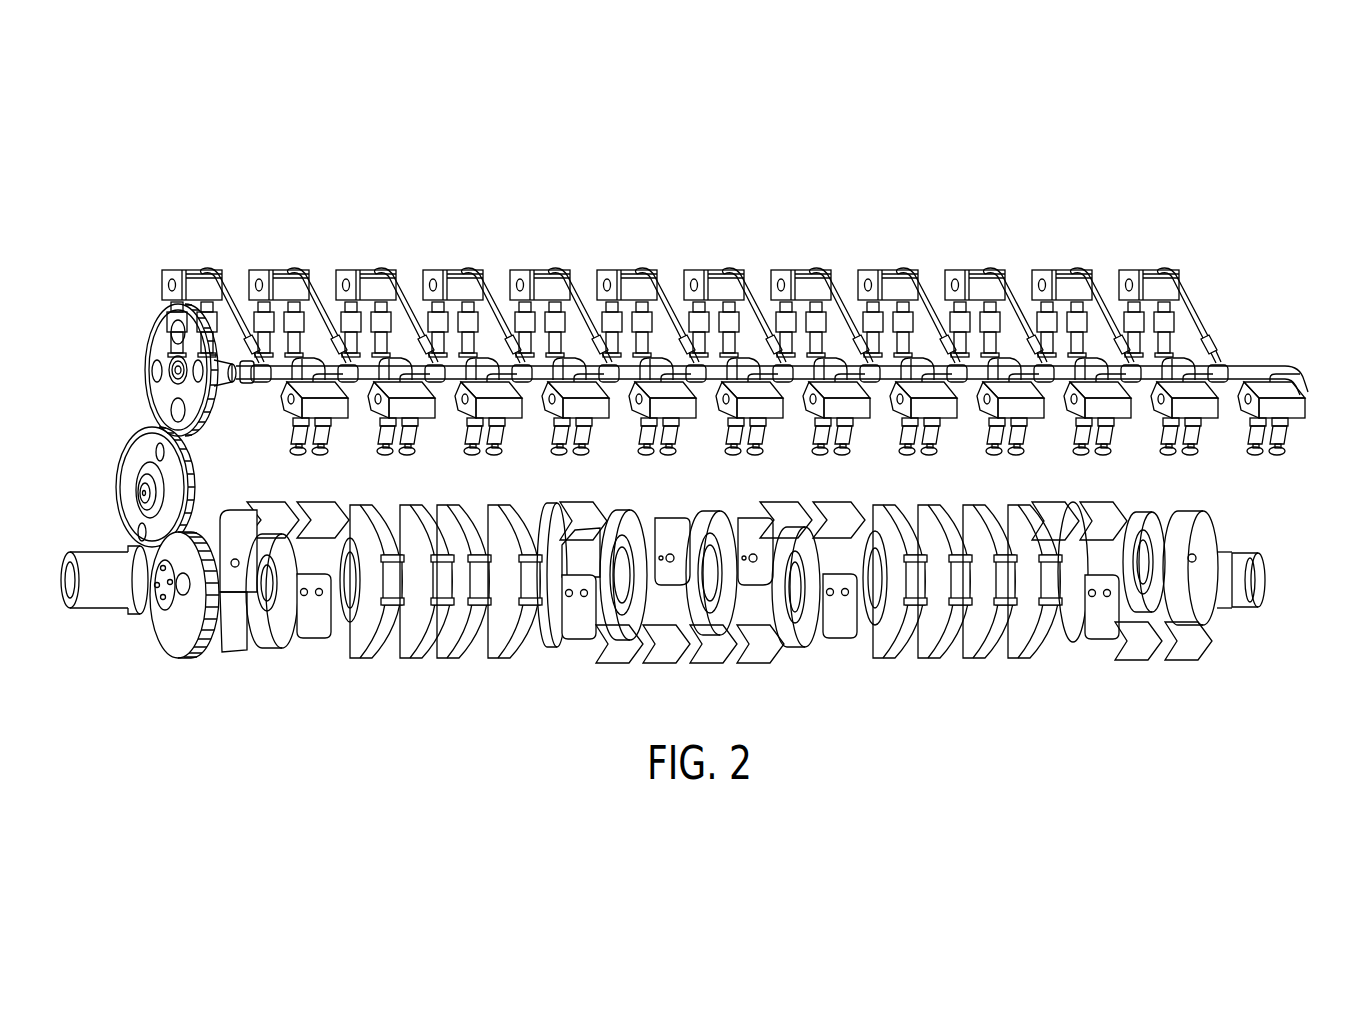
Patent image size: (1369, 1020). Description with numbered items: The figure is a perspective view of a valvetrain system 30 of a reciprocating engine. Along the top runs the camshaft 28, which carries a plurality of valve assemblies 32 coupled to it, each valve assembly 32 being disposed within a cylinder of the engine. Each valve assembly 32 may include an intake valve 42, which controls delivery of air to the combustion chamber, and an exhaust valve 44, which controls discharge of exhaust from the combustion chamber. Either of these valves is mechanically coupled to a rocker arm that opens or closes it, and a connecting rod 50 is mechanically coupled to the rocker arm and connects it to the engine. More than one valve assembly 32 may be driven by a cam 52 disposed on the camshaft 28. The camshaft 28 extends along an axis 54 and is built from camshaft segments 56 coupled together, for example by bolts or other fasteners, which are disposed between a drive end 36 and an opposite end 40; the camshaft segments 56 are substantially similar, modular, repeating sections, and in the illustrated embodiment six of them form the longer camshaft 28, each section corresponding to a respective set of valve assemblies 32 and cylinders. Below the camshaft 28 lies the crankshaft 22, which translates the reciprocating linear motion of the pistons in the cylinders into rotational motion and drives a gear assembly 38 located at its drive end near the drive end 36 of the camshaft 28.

The crankshaft 22 is at (1268, 583).
The camshaft 28 is at (1220, 340).
The valvetrain system 30 is at (288, 148).
The valve assembly 32 is at (1318, 391).
The drive end 36 is at (138, 272).
The gear assembly 38 is at (117, 492).
The opposite end 40 is at (1250, 258).
The intake valve 42 is at (1238, 456).
The exhaust valve 44 is at (1286, 482).
The connecting rod 50 is at (579, 305).
The cam 52 is at (608, 386).
The axis 54 is at (778, 189).
The camshaft segment 56 is at (528, 241).